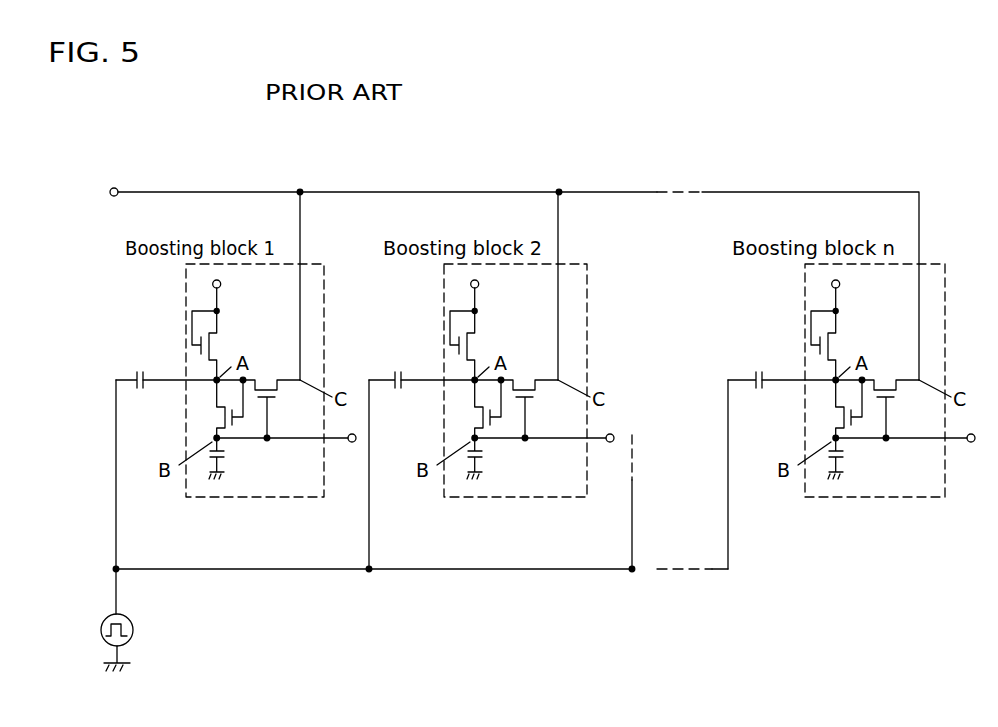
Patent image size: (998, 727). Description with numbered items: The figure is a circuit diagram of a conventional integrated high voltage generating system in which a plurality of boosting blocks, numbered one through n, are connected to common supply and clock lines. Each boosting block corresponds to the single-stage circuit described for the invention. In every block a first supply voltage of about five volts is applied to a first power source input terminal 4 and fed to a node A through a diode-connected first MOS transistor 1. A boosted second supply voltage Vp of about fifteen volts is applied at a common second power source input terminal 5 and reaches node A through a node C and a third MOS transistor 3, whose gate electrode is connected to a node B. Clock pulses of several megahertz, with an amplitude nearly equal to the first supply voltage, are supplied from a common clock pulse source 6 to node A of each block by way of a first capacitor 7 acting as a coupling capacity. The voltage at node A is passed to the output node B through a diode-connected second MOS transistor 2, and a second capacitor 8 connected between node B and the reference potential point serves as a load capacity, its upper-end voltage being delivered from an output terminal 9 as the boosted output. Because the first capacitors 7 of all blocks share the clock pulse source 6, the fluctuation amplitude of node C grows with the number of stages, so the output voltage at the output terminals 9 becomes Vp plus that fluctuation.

The first MOS transistor 1 is at (834, 344).
The second MOS transistor 2 is at (834, 418).
The third MOS transistor 3 is at (884, 381).
The first power source input terminal 4 is at (855, 284).
The second power source input terminal 5 is at (118, 190).
The clock pulse source 6 is at (100, 625).
The first capacitor 7 is at (759, 371).
The second capacitor 8 is at (866, 464).
The output terminal 9 is at (598, 453).